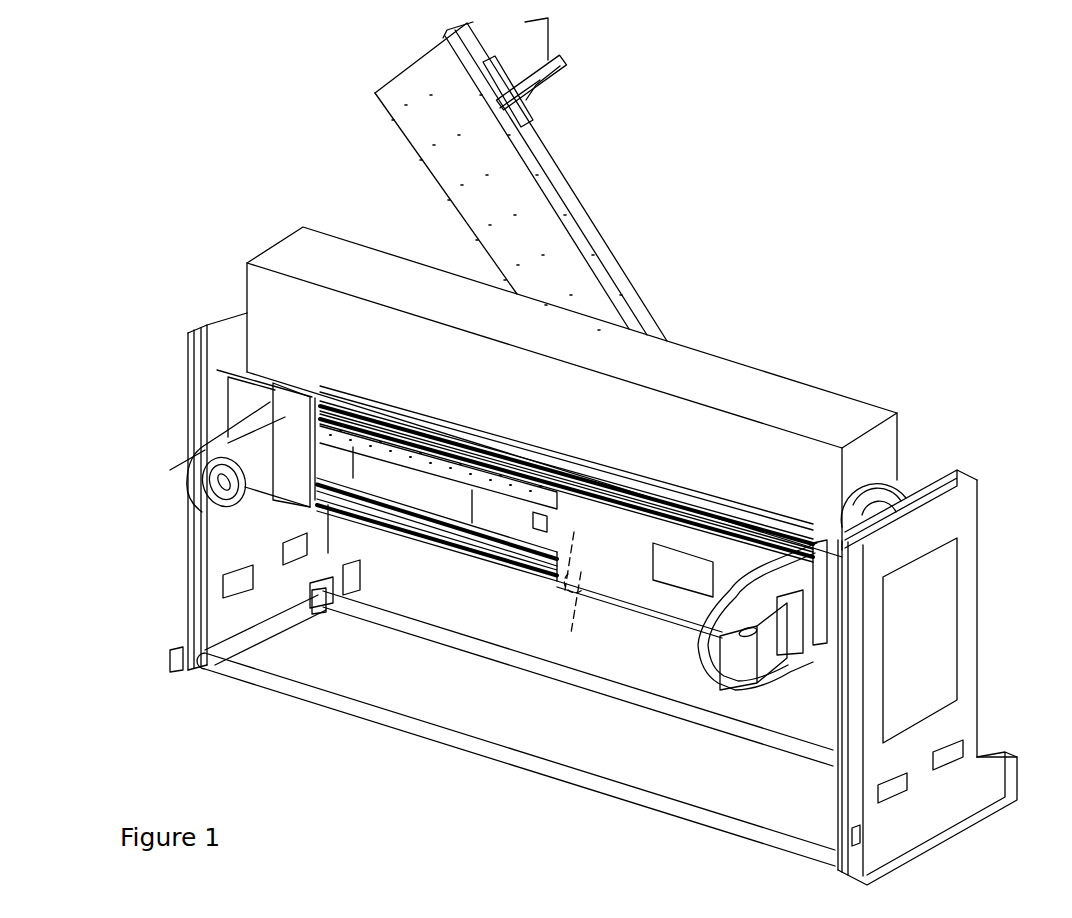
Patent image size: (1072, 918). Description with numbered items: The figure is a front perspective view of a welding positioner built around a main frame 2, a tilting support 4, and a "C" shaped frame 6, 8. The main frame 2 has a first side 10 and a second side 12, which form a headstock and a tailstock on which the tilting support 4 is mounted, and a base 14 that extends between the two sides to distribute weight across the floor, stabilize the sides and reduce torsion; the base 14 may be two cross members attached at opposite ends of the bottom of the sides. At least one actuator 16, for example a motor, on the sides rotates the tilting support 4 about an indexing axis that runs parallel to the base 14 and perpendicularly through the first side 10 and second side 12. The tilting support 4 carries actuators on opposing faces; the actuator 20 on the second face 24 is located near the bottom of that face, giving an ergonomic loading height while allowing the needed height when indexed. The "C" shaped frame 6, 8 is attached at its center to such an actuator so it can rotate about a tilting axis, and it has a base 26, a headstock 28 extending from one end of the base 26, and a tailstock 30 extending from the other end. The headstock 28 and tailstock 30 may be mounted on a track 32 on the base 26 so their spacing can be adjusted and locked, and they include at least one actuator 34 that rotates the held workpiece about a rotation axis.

The main frame 2 is at (220, 730).
The tilting support 4 is at (803, 383).
The "C" shaped frame 6 is at (577, 208).
The "C" shaped frame 8 is at (677, 613).
The first side 10 is at (973, 577).
The second side 12 is at (190, 583).
The base 14 is at (452, 755).
The actuator 16 is at (897, 490).
The actuator 20 is at (574, 596).
The second face 24 is at (721, 472).
The base 26 is at (624, 562).
The headstock 28 is at (697, 645).
The tailstock 30 is at (563, 53).
The track 32 is at (433, 453).
The actuator 34 is at (743, 673).